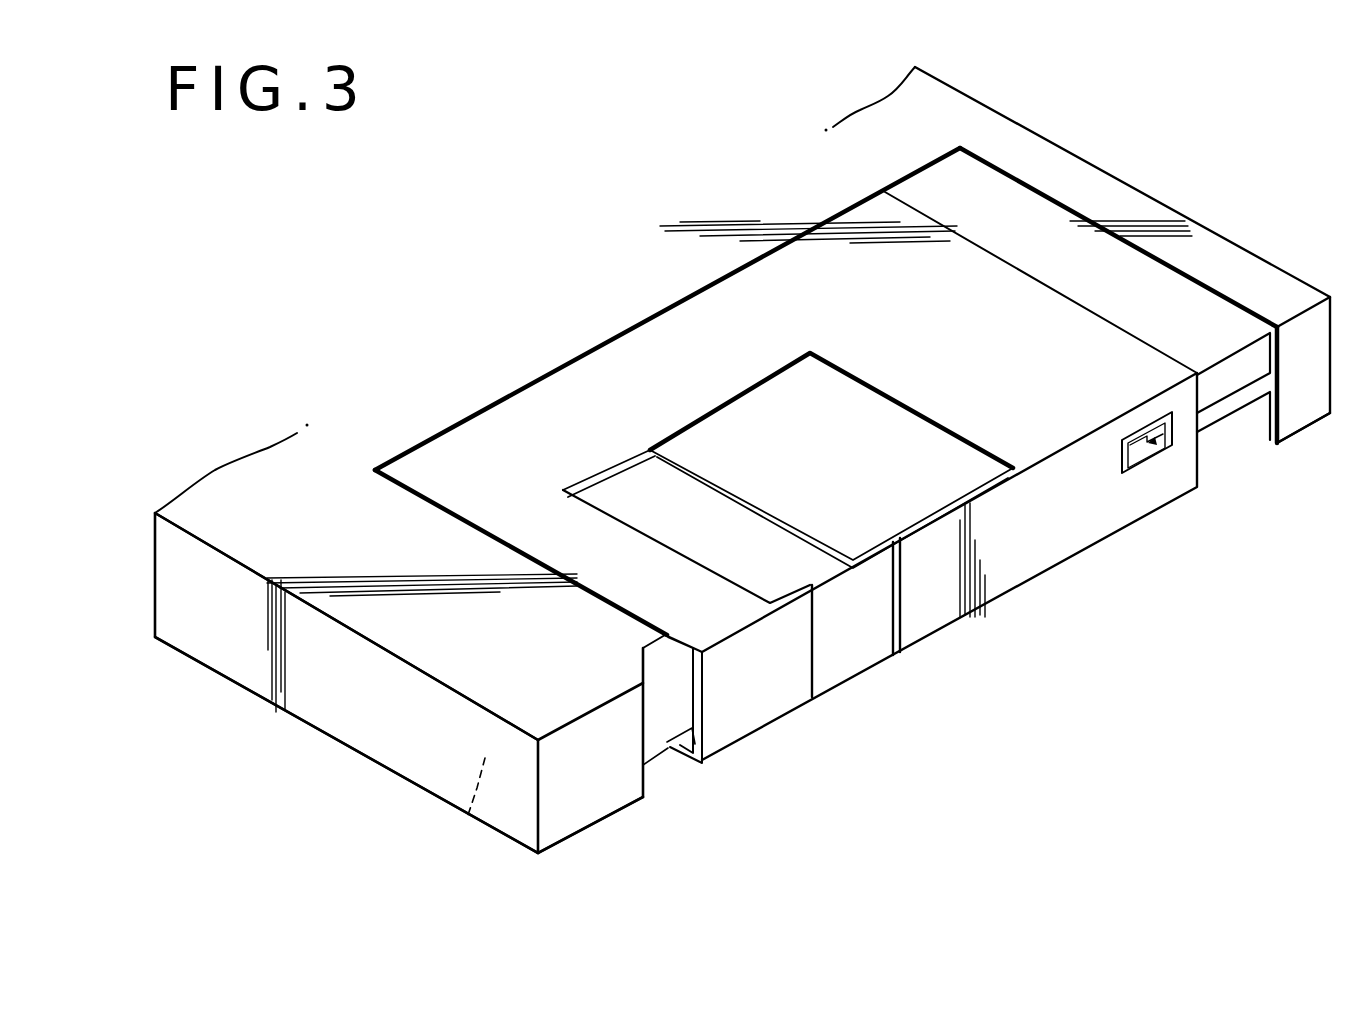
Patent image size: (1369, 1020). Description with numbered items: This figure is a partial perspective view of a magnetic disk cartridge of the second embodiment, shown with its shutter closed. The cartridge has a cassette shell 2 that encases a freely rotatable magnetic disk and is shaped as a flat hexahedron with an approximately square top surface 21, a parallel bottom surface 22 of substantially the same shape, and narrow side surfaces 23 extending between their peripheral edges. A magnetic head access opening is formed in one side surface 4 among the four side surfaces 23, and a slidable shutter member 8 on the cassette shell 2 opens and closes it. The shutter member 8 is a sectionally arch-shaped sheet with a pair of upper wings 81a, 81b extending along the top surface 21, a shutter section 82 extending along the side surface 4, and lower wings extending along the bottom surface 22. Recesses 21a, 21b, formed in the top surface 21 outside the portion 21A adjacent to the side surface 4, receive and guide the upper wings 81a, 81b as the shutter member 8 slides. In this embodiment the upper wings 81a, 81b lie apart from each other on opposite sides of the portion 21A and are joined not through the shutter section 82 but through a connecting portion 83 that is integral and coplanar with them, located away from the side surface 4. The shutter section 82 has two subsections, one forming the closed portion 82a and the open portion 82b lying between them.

The cassette shell 2 is at (1003, 142).
The side surface 4 is at (612, 797).
The shutter member 8 is at (825, 272).
The top surface 21 is at (322, 500).
The recess 21a is at (643, 492).
The portion of the top surface 21A is at (875, 456).
The recess 21b is at (1120, 287).
The bottom surface 22 is at (464, 805).
The side surfaces 23 is at (362, 715).
The upper wing 81a is at (592, 560).
The upper wing 81b is at (1113, 363).
The shutter section 82 is at (1137, 503).
The closed portion 82a is at (1010, 560).
The open portion 82b is at (818, 652).
The connecting portion 83 is at (681, 352).